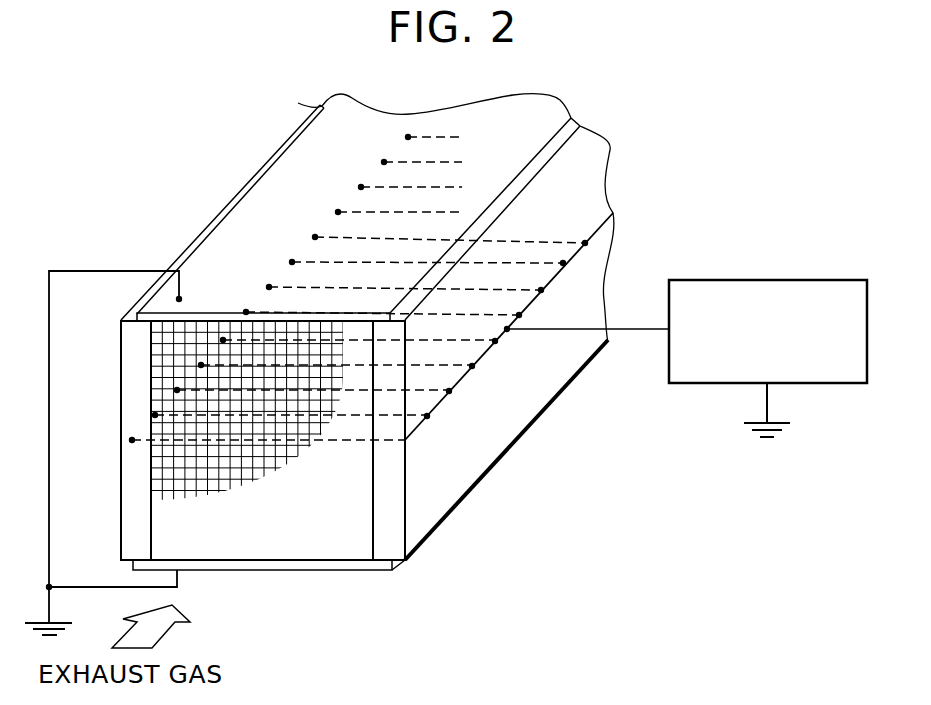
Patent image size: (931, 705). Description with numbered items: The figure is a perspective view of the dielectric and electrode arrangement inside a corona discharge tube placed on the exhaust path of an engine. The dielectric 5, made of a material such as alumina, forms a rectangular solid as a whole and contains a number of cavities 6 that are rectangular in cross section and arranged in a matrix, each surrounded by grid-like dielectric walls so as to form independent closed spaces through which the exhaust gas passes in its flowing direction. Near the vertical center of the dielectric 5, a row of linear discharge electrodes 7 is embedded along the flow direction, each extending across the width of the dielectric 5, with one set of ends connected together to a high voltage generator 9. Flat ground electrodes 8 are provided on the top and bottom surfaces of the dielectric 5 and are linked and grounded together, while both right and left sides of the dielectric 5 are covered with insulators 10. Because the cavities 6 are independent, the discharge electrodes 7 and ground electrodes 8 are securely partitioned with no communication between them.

The dielectric 5 is at (327, 510).
The cavities 6 is at (153, 395).
The discharge electrodes 7 is at (470, 341).
The ground electrodes 8 is at (288, 192).
The high voltage generator 9 is at (815, 280).
The insulators 10 is at (137, 533).